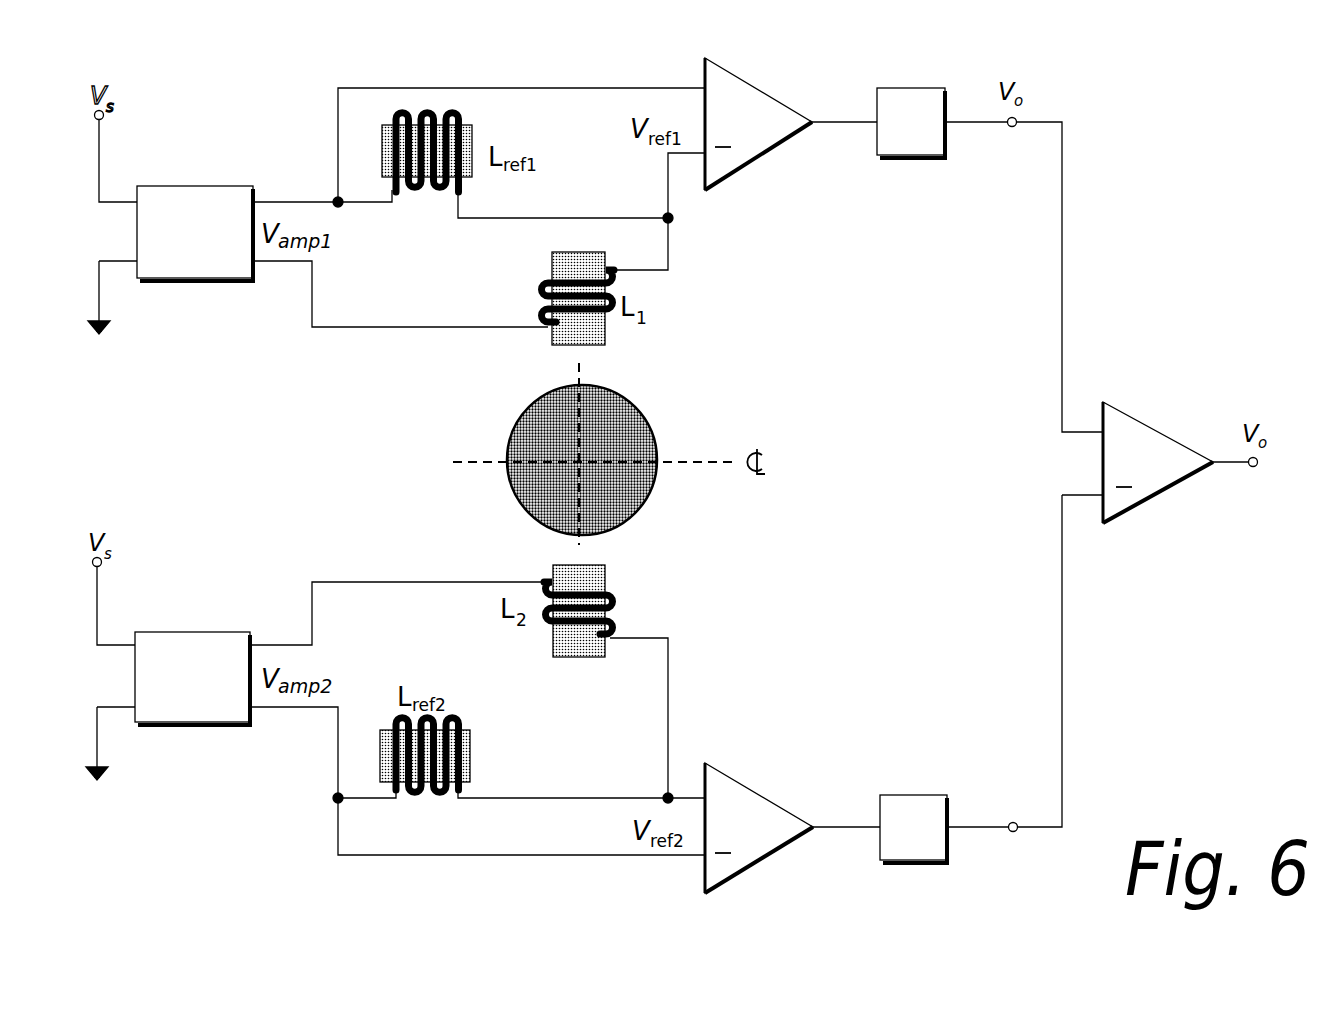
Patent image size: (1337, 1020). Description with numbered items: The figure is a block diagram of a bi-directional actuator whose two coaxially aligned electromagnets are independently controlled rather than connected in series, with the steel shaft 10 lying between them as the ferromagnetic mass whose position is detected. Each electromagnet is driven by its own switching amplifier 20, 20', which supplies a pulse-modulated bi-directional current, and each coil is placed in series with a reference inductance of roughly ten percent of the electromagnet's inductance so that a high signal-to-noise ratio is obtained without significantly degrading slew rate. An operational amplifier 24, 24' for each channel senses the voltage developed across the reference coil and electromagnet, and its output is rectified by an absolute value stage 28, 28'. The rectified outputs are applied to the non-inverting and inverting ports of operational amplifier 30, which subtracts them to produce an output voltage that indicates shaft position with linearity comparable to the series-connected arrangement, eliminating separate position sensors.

The steel shaft 10 is at (637, 403).
The switching amplifier 20 is at (195, 263).
The switching amplifier 20' is at (192, 709).
The operational amplifier 24 is at (762, 114).
The operational amplifier 24' is at (764, 815).
The absolute value stage 28 is at (908, 161).
The absolute value stage 28' is at (917, 794).
The operational amplifier 30 is at (1167, 430).